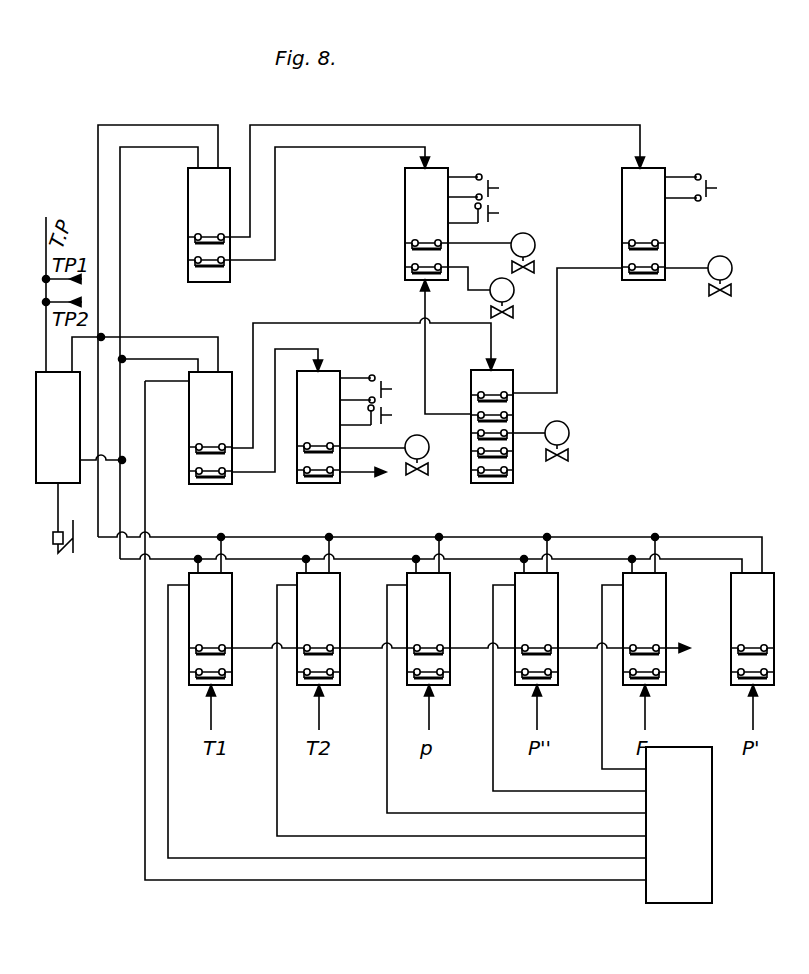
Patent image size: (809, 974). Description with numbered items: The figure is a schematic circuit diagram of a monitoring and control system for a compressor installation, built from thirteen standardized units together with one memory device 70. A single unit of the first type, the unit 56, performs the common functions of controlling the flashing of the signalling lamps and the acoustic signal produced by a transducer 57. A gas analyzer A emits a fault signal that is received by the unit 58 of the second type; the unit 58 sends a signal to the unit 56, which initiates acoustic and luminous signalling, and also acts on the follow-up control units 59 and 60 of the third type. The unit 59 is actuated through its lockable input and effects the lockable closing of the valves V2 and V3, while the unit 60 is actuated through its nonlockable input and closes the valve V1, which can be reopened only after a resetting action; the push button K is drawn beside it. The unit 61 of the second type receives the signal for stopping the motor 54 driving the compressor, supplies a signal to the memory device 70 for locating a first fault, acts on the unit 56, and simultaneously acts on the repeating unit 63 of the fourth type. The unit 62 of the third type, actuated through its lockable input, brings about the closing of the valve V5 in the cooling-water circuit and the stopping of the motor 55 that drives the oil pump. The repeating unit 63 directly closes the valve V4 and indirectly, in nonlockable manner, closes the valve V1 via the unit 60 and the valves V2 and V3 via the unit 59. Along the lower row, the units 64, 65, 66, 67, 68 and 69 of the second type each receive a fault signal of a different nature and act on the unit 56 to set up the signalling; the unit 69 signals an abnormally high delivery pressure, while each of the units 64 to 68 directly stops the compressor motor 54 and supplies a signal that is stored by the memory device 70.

The motor 54 is at (212, 484).
The motor 55 is at (367, 482).
The unit of the first type 56 is at (70, 473).
The transducer 57 is at (61, 539).
The unit of the second type 58 is at (203, 167).
The unit of the third type 59 is at (418, 165).
The unit of the third type 60 is at (652, 172).
The unit of the second type 61 is at (188, 427).
The unit of the third type 62 is at (322, 425).
The repeating unit of the fourth type 63 is at (530, 408).
The unit of the second type 64 is at (193, 660).
The unit of the second type 65 is at (335, 660).
The unit of the second type 66 is at (443, 660).
The unit of the second type 67 is at (553, 660).
The unit of the second type 68 is at (658, 617).
The unit of the second type 69 is at (730, 583).
The memory device 70 is at (691, 843).
The gas analyzer A is at (211, 283).
The push button K is at (706, 182).
The valve V1 is at (721, 265).
The valve V2 is at (529, 242).
The valve V3 is at (517, 298).
The valve V4 is at (573, 441).
The valve V5 is at (432, 455).